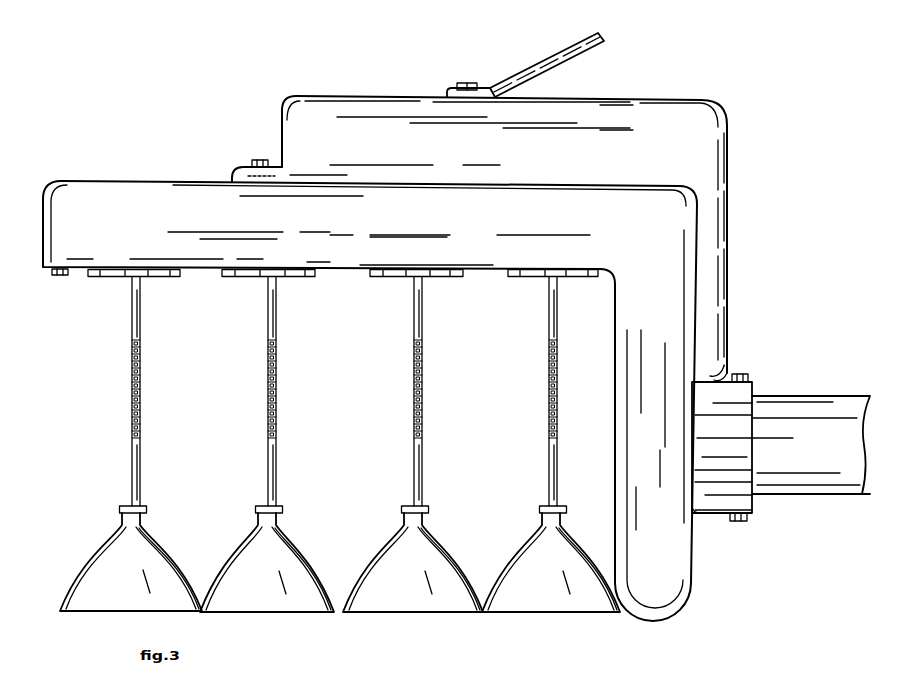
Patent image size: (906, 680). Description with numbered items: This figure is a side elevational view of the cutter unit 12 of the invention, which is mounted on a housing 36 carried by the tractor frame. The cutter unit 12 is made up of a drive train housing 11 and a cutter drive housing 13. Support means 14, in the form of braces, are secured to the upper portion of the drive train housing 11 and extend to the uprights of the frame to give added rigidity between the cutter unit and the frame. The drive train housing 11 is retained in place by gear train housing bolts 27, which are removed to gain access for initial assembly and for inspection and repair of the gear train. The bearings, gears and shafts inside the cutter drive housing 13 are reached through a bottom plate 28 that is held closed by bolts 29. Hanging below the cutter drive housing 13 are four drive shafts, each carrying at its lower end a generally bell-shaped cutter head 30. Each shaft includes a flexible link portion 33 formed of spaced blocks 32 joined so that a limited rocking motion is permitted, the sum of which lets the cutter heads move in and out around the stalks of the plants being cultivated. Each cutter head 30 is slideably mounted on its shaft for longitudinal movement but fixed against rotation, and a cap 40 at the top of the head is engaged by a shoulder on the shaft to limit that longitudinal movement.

The drive train housing 11 is at (727, 128).
The cutter unit 12 is at (243, 148).
The cutter drive housing 13 is at (143, 181).
The support means 14 is at (540, 63).
The gear train housing bolts 27 is at (260, 160).
The bottom plate 28 is at (498, 267).
The bolts 29 is at (60, 276).
The cutter head 30 is at (158, 585).
The block 32 is at (277, 400).
The flexible link portion 33 is at (265, 362).
The housing 36 is at (820, 412).
The cap 40 is at (140, 507).